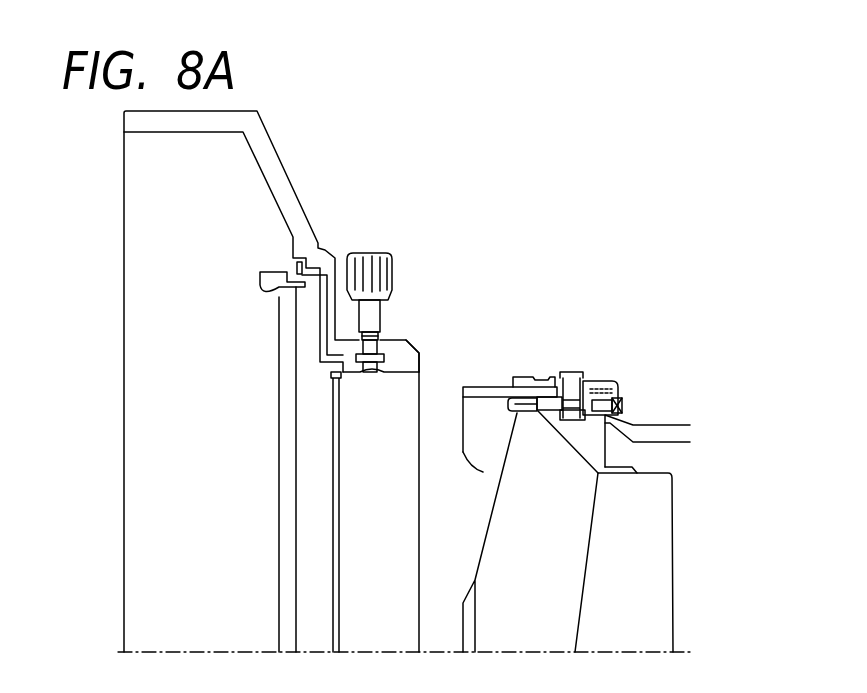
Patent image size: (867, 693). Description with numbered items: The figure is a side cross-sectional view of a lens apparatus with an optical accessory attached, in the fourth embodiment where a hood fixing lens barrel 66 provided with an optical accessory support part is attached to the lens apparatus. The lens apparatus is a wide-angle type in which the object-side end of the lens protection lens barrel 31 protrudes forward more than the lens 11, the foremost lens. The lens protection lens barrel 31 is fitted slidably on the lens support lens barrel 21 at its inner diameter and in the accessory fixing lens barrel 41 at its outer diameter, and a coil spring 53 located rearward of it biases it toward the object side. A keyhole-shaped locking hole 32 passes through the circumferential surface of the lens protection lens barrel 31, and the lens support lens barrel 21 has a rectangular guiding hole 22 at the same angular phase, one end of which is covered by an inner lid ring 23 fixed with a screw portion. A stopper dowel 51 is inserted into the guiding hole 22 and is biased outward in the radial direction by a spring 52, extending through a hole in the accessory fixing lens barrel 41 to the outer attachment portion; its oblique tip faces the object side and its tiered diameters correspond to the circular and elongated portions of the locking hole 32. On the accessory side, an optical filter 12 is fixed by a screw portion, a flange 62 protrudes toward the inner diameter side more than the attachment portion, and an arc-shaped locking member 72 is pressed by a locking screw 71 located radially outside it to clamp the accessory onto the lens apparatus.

The lens 11 is at (490, 546).
The optical filter 12 is at (272, 297).
The lens support lens barrel 21 is at (537, 413).
The guiding hole 22 is at (618, 421).
The inner lid ring 23 is at (570, 441).
The lens protection lens barrel 31 is at (491, 386).
The locking hole 32 is at (552, 392).
The accessory fixing lens barrel 41 is at (523, 376).
The stopper dowel 51 is at (573, 372).
The spring 52 is at (547, 411).
The coil spring 53 is at (606, 380).
The flange 62 is at (333, 380).
The hood fixing lens barrel 66 is at (407, 352).
The locking screw 71 is at (373, 253).
The locking member 72 is at (370, 380).